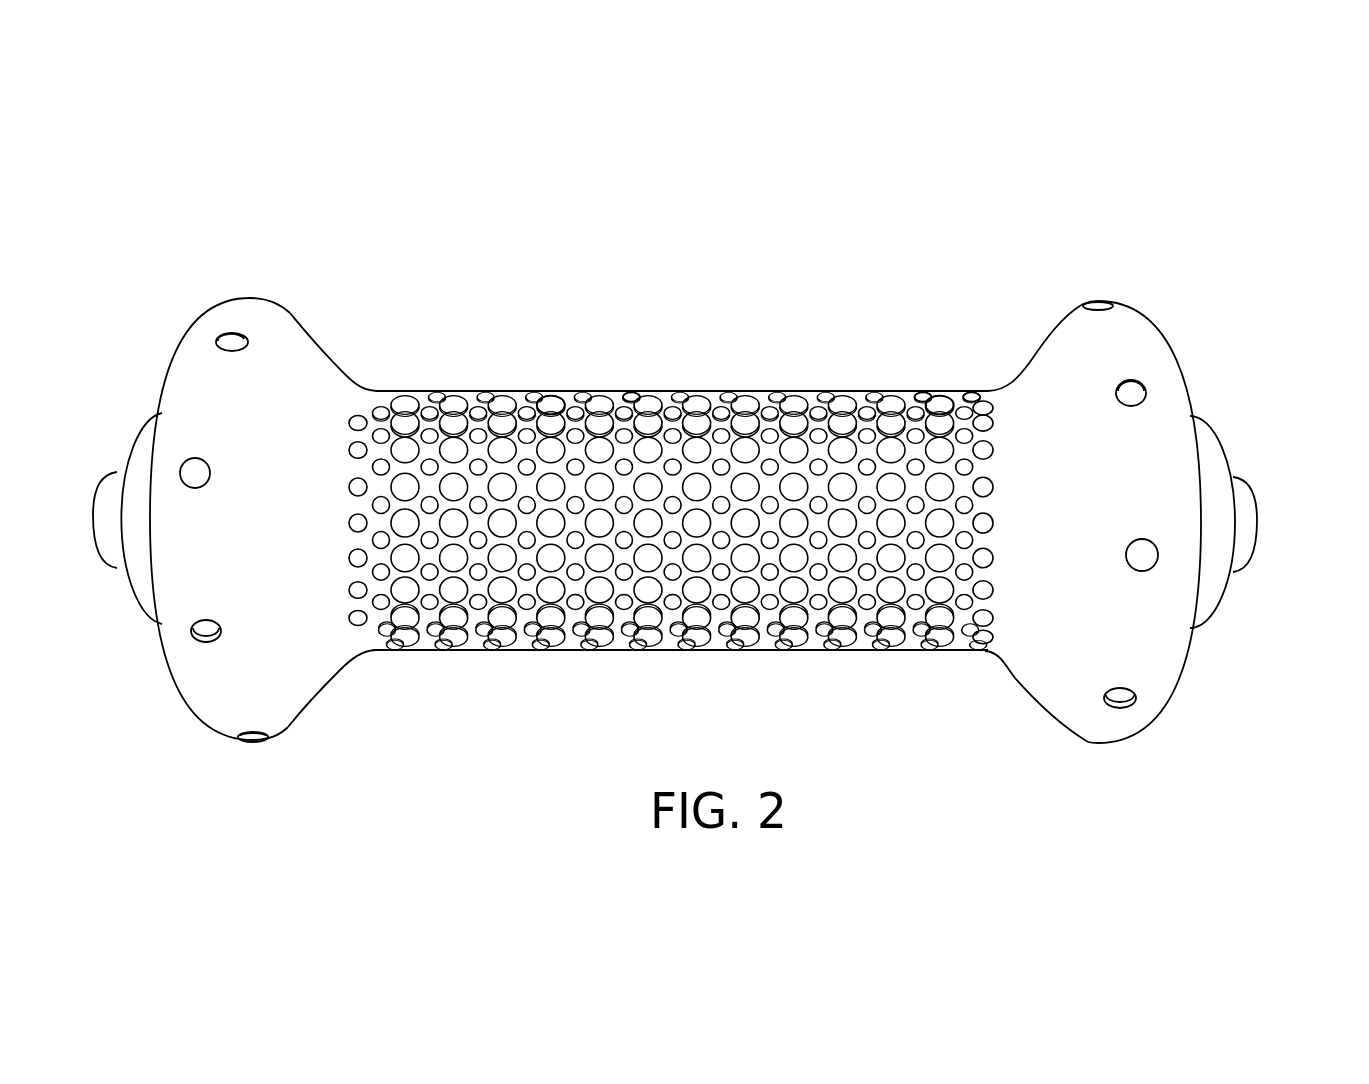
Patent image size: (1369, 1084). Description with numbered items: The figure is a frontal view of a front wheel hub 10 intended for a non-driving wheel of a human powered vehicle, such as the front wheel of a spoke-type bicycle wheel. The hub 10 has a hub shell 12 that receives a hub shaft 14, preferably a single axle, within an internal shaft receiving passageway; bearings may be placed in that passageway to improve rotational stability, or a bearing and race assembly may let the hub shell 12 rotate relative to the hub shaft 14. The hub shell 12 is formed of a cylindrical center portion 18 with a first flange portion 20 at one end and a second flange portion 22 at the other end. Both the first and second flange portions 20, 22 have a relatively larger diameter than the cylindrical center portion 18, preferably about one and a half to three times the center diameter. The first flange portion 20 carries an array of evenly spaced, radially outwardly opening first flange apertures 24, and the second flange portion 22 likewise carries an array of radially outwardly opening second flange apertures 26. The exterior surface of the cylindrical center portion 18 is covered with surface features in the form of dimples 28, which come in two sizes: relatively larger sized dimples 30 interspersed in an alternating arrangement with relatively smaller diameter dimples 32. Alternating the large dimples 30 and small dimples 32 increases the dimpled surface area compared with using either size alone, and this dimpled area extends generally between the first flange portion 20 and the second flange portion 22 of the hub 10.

The hub 10 is at (630, 196).
The hub shell 12 is at (348, 368).
The hub shaft 14 is at (1240, 477).
The cylindrical center portion 18 is at (658, 652).
The first flange portion 20 is at (287, 728).
The second flange portion 22 is at (1103, 745).
The first flange apertures 24 is at (247, 337).
The second flange apertures 26 is at (1138, 381).
The dimples 28 is at (953, 393).
The larger sized dimples 30 is at (555, 395).
The smaller diameter dimples 32 is at (628, 393).